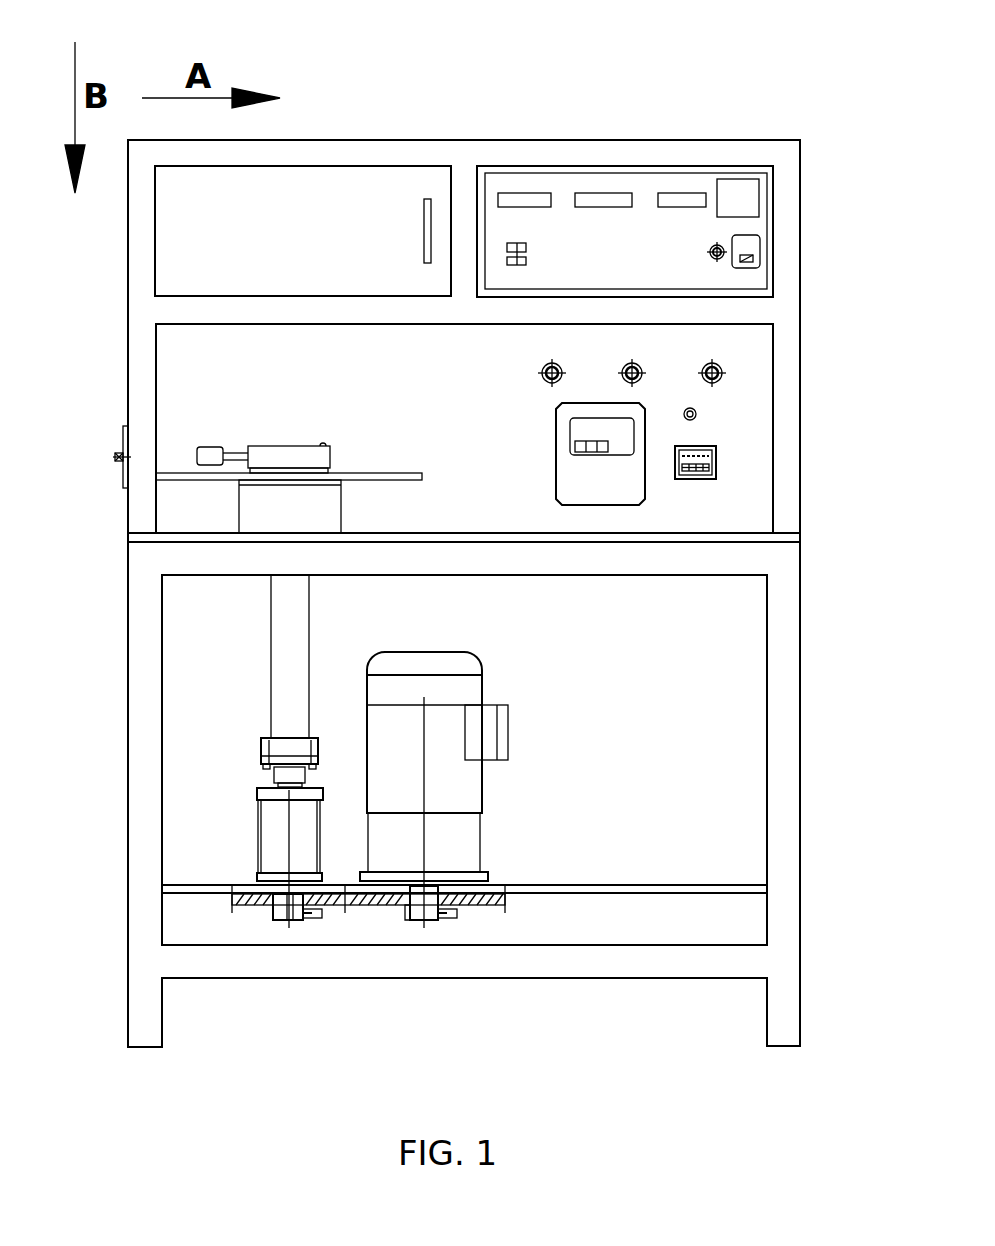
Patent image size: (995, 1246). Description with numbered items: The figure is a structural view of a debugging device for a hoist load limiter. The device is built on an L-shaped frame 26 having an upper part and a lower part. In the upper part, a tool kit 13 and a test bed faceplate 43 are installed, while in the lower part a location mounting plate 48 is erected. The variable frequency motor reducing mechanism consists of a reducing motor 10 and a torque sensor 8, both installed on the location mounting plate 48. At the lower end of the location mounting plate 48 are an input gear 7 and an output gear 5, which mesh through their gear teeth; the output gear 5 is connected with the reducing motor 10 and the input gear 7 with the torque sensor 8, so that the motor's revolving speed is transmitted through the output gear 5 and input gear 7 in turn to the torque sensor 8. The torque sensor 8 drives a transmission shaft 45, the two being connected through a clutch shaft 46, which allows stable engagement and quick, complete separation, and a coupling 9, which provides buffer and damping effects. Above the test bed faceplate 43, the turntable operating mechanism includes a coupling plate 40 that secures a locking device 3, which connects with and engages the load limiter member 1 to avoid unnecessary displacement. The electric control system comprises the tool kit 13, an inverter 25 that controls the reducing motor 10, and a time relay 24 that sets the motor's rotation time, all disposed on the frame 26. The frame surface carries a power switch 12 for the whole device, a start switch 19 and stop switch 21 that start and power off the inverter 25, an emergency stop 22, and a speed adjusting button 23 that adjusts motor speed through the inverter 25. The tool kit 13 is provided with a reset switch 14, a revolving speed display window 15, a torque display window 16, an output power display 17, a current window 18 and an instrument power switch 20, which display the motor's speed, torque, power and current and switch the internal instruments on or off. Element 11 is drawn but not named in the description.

The load limiter member 1 is at (283, 446).
The locking device 3 is at (237, 453).
The output gear 5 is at (395, 901).
The input gear 7 is at (235, 900).
The torque sensor 8 is at (292, 835).
The coupling 9 is at (293, 748).
The reducing motor 10 is at (423, 785).
The support base 11 is at (260, 507).
The power switch 12 is at (117, 453).
The tool kit 13 is at (255, 198).
The reset switch 14 is at (517, 252).
The revolving speed display window 15 is at (527, 202).
The torque display window 16 is at (592, 200).
The output power display 17 is at (680, 200).
The current window 18 is at (735, 197).
The start switch 19 is at (556, 369).
The instrument power switch 20 is at (748, 253).
The stop switch 21 is at (643, 370).
The emergency stop 22 is at (727, 373).
The speed adjusting button 23 is at (697, 415).
The time relay 24 is at (712, 468).
The inverter 25 is at (610, 468).
The frame 26 is at (782, 755).
The coupling plate 40 is at (363, 477).
The test bed faceplate 43 is at (485, 538).
The transmission shaft 45 is at (293, 614).
The clutch shaft 46 is at (283, 761).
The location mounting plate 48 is at (588, 885).